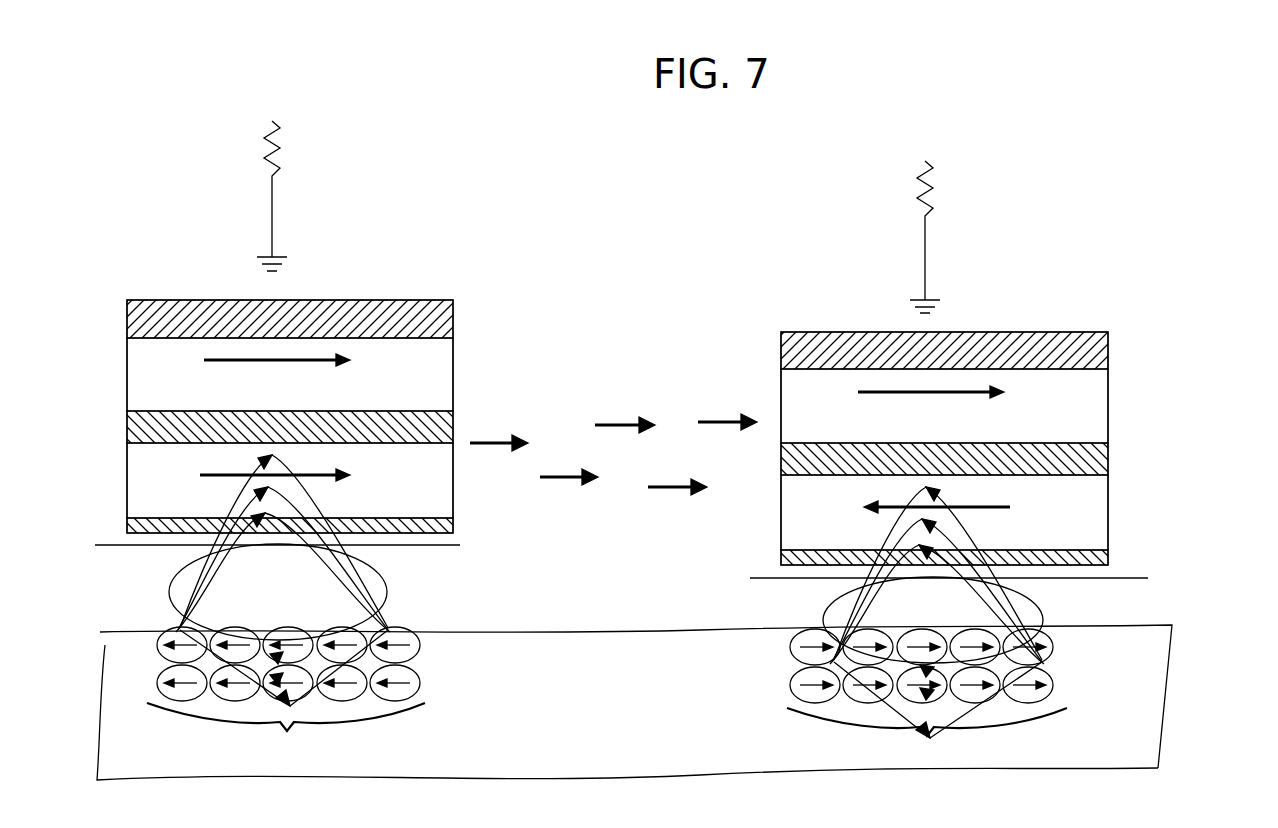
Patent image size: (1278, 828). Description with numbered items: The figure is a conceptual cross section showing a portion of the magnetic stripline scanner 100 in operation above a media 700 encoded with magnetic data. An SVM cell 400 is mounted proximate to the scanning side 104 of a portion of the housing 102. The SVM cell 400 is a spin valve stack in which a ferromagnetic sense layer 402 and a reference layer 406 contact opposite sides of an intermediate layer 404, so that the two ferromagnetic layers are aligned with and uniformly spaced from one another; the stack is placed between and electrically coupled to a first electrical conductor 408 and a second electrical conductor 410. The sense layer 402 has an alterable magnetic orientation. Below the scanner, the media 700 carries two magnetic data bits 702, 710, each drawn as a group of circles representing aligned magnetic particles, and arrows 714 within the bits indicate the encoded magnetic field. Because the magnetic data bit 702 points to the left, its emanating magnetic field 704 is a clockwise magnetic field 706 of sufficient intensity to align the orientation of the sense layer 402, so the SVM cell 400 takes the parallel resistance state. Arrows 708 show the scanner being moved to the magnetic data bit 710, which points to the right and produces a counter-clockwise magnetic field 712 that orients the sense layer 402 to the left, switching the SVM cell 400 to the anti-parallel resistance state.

The magnetic stripline scanner 100 is at (426, 221).
The SVM cell 400 is at (441, 279).
The first electrical conductor 408 is at (157, 315).
The reference layer 406 is at (157, 385).
The intermediate layer 404 is at (155, 430).
The ferromagnetic sense layer 402 is at (157, 478).
The second electrical conductor 410 is at (133, 525).
The housing 102 is at (472, 546).
The scanning side 104 is at (90, 560).
The emanating magnetic field 704 is at (390, 583).
The clockwise magnetic field 706 is at (283, 580).
The counter-clockwise magnetic field 712 is at (937, 612).
The arrows 708 is at (613, 444).
The arrows 714 is at (187, 678).
The magnetic data bit 702 is at (286, 734).
The magnetic data bit 710 is at (927, 740).
The media 700 is at (1157, 745).